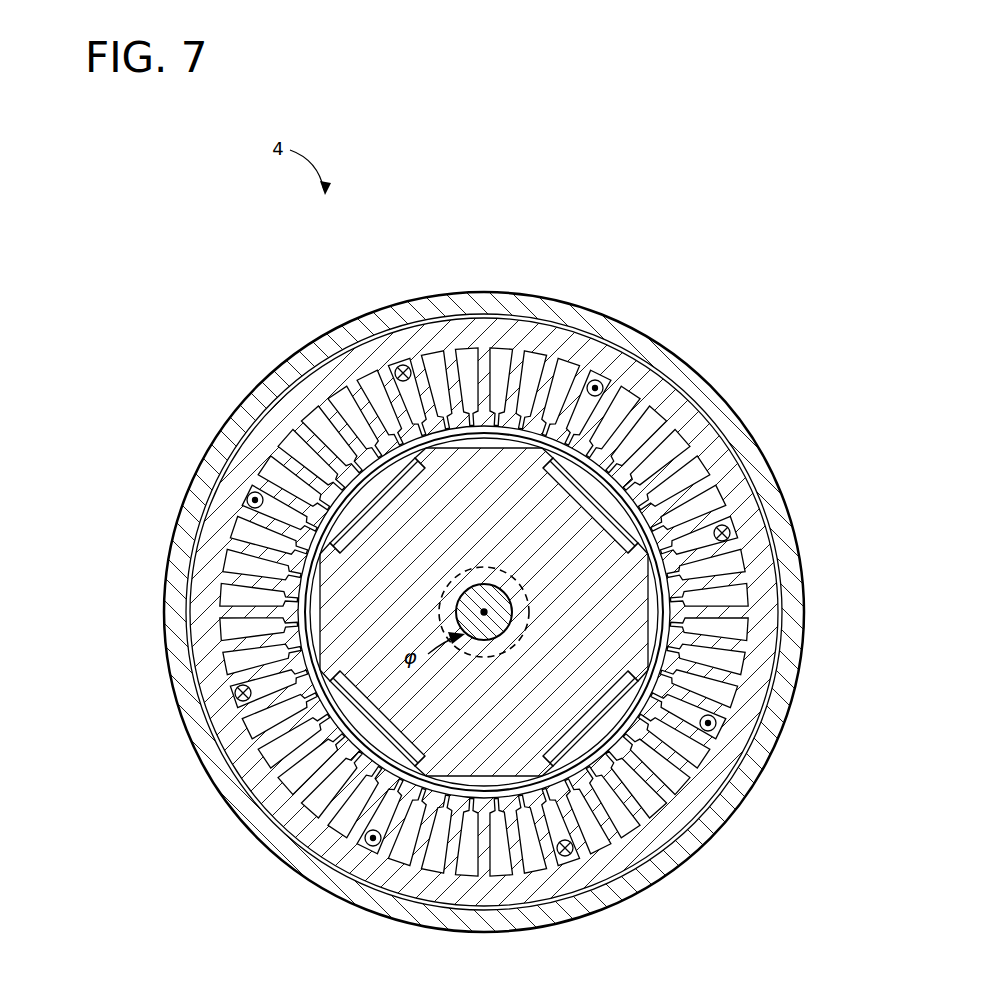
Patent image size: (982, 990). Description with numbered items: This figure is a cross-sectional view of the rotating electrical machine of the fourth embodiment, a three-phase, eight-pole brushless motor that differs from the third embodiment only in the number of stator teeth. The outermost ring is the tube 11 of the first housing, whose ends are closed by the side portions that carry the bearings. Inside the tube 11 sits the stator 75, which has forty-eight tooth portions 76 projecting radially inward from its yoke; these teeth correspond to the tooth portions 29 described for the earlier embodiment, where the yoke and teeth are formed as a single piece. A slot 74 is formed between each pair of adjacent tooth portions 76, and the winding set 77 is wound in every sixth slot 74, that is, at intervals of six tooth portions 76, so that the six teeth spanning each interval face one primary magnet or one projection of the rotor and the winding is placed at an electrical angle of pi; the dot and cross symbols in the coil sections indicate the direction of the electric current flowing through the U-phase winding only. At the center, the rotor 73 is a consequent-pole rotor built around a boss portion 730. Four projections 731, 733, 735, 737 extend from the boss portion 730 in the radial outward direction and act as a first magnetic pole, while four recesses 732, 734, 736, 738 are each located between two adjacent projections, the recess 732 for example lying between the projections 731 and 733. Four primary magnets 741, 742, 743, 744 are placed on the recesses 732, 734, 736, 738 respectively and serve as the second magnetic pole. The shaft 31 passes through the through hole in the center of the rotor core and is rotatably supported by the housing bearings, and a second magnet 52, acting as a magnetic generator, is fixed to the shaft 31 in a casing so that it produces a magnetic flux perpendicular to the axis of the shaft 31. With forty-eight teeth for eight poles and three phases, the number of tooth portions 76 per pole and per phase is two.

The tube 11 is at (660, 362).
The tooth portions 29 is at (372, 390).
The shaft 31 is at (506, 620).
The second magnet 52 is at (524, 632).
The rotor 73 is at (660, 587).
The boss portion 730 is at (368, 396).
The projection 731 is at (502, 450).
The recess 732 is at (630, 475).
The projection 733 is at (652, 650).
The recess 734 is at (545, 722).
The projection 735 is at (452, 778).
The recess 736 is at (400, 738).
The projection 737 is at (328, 635).
The recess 738 is at (408, 522).
The slot 74 is at (440, 382).
The primary magnet 741 is at (625, 488).
The primary magnet 742 is at (600, 723).
The primary magnet 743 is at (395, 765).
The primary magnet 744 is at (372, 505).
The stator 75 is at (724, 416).
The tooth portions 76 is at (540, 373).
The winding set 77 is at (400, 366).